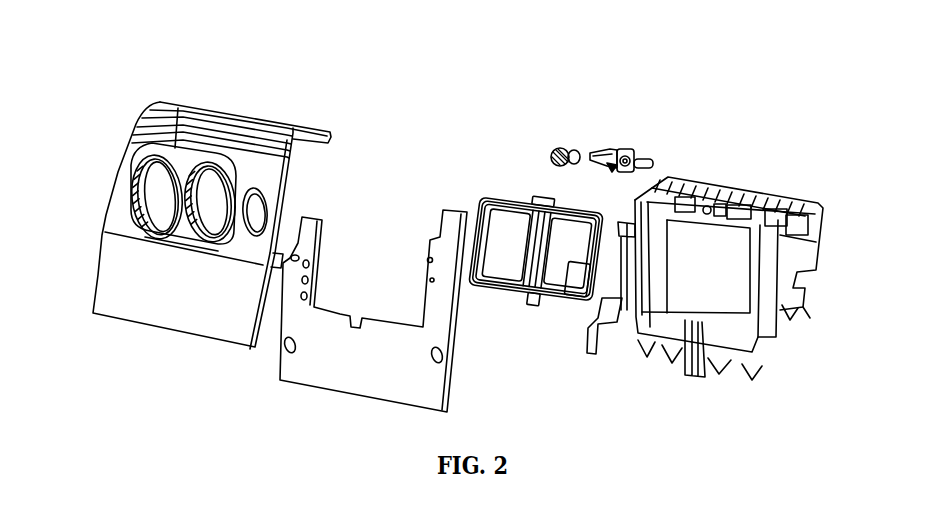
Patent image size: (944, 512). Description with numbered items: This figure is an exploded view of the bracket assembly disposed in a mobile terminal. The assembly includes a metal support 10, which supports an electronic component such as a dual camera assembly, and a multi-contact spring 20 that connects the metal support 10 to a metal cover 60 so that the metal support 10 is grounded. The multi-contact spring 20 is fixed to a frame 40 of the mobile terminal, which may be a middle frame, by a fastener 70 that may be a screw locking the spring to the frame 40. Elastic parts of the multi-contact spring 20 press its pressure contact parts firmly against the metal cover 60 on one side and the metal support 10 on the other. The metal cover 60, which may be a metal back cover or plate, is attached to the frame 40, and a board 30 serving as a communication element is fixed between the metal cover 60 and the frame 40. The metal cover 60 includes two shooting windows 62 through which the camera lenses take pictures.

The metal support 10 is at (508, 200).
The multi-contact spring 20 is at (630, 150).
The board 30 is at (395, 343).
The frame 40 is at (785, 197).
The metal cover 60 is at (212, 209).
The shooting window 62 is at (137, 237).
The fastener 70 is at (568, 148).